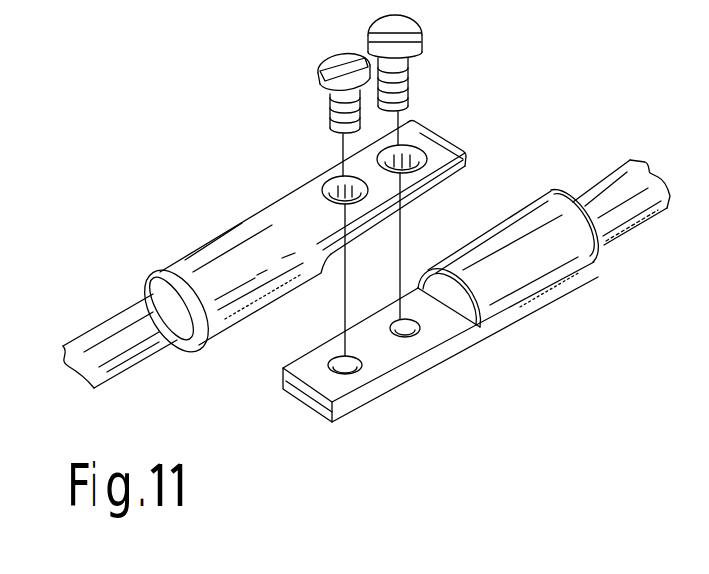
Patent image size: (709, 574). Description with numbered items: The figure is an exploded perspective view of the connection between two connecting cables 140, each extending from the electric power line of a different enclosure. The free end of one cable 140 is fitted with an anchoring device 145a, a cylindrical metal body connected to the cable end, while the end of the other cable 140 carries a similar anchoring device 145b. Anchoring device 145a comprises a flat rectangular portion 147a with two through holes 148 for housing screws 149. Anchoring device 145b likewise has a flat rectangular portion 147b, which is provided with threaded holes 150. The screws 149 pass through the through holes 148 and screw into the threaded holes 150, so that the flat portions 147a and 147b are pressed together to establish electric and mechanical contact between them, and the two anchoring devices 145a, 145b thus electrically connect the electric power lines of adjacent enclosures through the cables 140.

The connecting cable 140 is at (100, 342).
The anchoring device 145a is at (172, 251).
The anchoring device 145b is at (548, 322).
The flat rectangular portion 147a is at (456, 131).
The flat rectangular portion 147b is at (440, 322).
The through holes 148 is at (360, 200).
The screws 149 is at (367, 41).
The threaded holes 150 is at (403, 340).